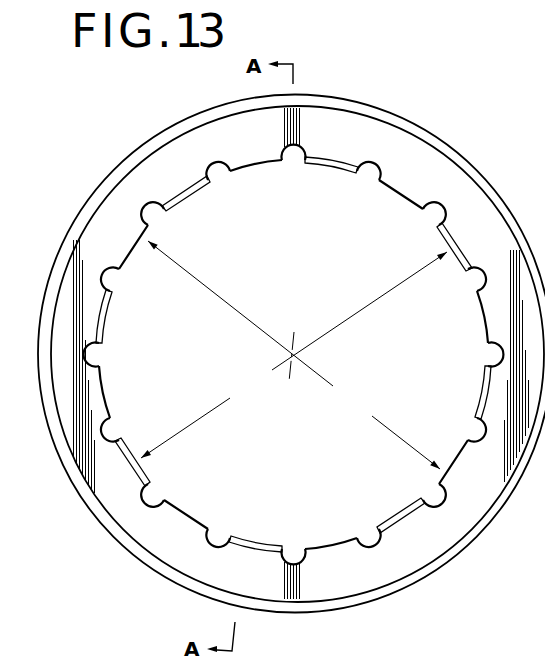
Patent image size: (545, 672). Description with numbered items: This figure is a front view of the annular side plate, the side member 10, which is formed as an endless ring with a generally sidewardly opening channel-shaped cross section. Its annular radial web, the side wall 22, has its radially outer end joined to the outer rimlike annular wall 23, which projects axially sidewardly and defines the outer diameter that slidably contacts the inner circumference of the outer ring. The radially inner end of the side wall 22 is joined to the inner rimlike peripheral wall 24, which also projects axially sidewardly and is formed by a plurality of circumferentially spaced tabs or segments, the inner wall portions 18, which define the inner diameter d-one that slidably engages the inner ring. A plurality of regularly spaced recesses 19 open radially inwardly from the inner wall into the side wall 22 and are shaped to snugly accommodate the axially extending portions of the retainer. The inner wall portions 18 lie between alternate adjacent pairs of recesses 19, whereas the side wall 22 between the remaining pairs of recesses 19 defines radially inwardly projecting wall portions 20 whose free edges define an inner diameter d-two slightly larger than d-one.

The side member 10 is at (274, 351).
The inner wall portions 18 is at (155, 478).
The recesses 19 is at (227, 186).
The radially inwardly projecting wall portions 20 is at (135, 260).
The side wall 22 is at (92, 226).
The outer annular wall 23 is at (40, 360).
The inner peripheral wall 24 is at (388, 510).